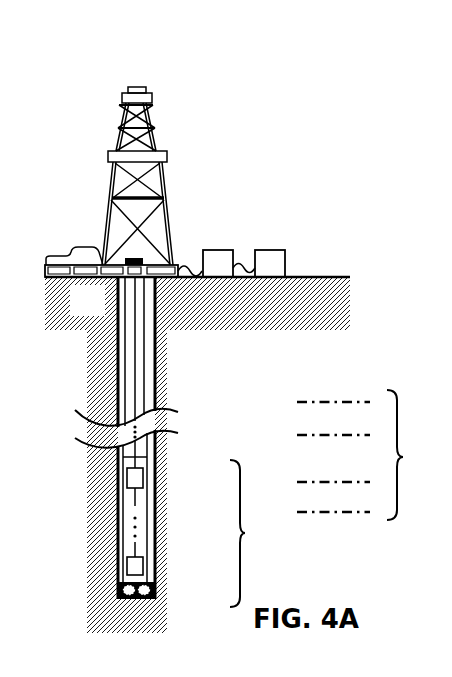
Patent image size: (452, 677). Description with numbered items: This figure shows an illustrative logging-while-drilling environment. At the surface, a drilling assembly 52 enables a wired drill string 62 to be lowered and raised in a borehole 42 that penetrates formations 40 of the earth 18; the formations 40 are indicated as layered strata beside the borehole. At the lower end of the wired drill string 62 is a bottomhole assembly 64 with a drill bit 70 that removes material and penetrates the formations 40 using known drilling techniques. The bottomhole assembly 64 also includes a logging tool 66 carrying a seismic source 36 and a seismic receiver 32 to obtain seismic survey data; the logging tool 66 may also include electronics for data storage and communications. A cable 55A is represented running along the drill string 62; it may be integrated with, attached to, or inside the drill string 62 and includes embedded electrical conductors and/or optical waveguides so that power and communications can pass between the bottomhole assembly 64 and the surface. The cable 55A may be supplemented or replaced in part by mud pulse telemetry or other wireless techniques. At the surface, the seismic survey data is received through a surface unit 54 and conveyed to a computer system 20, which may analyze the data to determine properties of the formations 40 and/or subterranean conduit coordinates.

The drilling assembly 52 is at (112, 188).
The surface control unit 54 is at (215, 251).
The computer system 20 is at (287, 263).
The earth 18 is at (101, 314).
The borehole 42 is at (156, 327).
The wired drill string 62 is at (146, 357).
The cable 55A is at (137, 385).
The seismic source 36 is at (143, 480).
The logging tool 66 is at (150, 523).
The seismic receiver 32 is at (143, 565).
The drill bit 70 is at (152, 589).
The formations 40 is at (369, 455).
The bottomhole assembly 64 is at (257, 533).